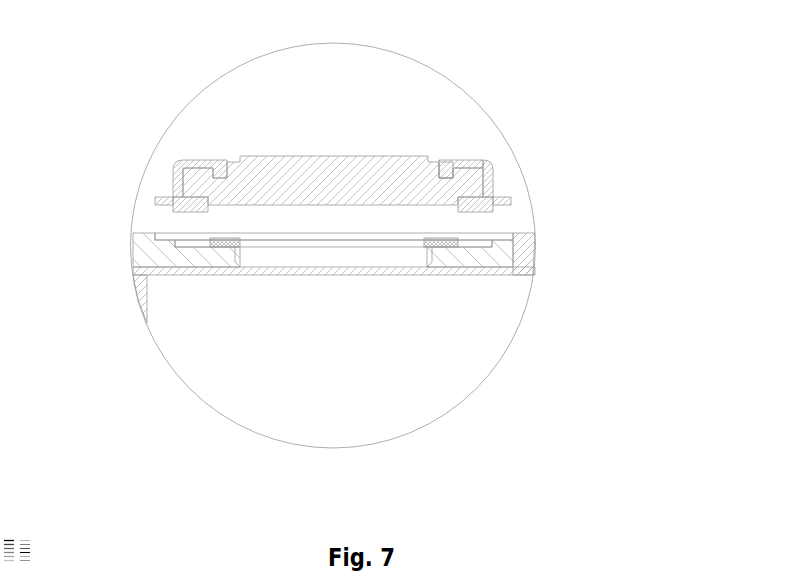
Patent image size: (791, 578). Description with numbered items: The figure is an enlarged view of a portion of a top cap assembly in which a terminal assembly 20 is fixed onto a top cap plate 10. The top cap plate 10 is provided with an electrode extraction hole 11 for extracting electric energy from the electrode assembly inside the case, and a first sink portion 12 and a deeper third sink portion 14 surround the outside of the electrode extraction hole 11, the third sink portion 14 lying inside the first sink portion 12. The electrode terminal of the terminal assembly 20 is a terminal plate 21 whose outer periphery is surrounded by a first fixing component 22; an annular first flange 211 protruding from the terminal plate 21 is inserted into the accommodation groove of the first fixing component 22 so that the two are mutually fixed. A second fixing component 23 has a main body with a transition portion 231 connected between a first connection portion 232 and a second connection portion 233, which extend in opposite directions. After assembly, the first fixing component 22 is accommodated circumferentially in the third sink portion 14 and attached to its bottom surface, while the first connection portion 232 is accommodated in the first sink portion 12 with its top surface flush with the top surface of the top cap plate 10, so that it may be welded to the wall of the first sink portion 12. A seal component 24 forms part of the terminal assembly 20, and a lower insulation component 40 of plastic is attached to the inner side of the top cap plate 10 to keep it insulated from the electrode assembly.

The terminal assembly 20 is at (408, 84).
The terminal plate 21 is at (302, 172).
The first flange 211 is at (212, 193).
The first fixing component 22 is at (452, 160).
The second fixing component 23 is at (548, 157).
The second connection portion 233 is at (473, 160).
The transition portion 231 is at (492, 183).
The first connection portion 232 is at (507, 198).
The top cap plate 10 is at (157, 258).
The electrode extraction hole 11 is at (320, 268).
The first sink portion 12 is at (504, 240).
The third sink portion 14 is at (182, 240).
The seal component 24 is at (213, 245).
The lower insulation component 40 is at (458, 272).